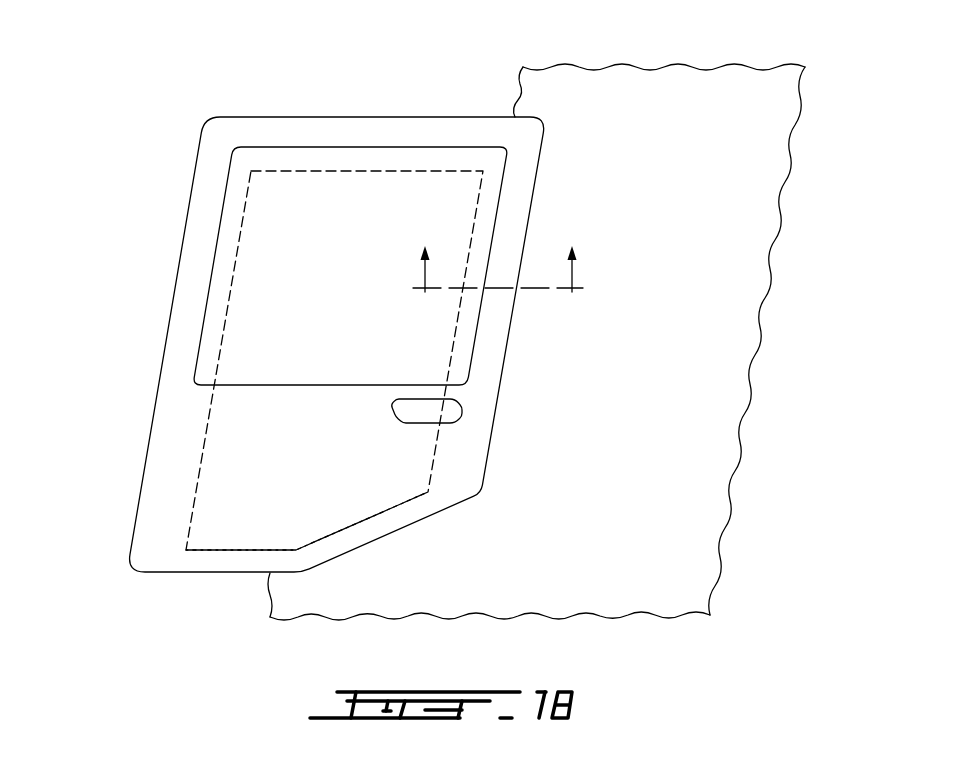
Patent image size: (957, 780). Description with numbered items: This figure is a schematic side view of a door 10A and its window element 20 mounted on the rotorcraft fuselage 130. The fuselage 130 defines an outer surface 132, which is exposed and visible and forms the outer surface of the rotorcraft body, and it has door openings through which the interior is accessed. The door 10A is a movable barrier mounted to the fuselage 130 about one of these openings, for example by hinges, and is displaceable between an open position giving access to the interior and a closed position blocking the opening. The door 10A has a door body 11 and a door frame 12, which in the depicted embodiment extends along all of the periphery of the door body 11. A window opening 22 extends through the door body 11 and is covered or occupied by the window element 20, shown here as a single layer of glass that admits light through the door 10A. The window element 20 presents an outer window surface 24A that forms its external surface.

The door 10A is at (311, 326).
The door body 11 is at (243, 520).
The door frame 12 is at (184, 449).
The window element 20 is at (388, 213).
The window opening 22 is at (456, 134).
The outer window surface 24A is at (327, 313).
The fuselage 130 is at (723, 342).
The outer surface 132 is at (614, 423).